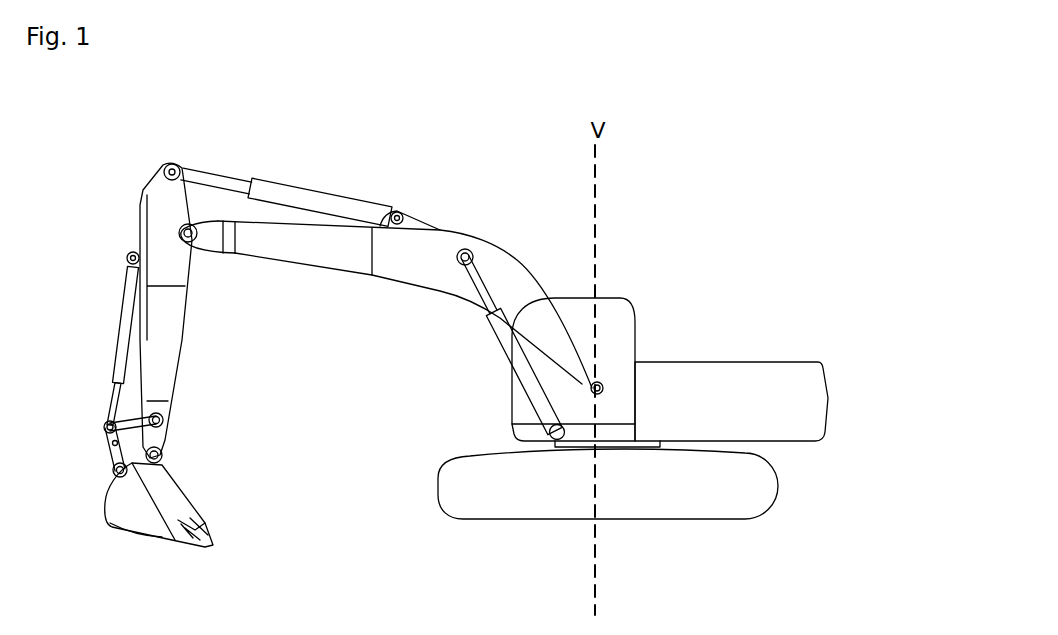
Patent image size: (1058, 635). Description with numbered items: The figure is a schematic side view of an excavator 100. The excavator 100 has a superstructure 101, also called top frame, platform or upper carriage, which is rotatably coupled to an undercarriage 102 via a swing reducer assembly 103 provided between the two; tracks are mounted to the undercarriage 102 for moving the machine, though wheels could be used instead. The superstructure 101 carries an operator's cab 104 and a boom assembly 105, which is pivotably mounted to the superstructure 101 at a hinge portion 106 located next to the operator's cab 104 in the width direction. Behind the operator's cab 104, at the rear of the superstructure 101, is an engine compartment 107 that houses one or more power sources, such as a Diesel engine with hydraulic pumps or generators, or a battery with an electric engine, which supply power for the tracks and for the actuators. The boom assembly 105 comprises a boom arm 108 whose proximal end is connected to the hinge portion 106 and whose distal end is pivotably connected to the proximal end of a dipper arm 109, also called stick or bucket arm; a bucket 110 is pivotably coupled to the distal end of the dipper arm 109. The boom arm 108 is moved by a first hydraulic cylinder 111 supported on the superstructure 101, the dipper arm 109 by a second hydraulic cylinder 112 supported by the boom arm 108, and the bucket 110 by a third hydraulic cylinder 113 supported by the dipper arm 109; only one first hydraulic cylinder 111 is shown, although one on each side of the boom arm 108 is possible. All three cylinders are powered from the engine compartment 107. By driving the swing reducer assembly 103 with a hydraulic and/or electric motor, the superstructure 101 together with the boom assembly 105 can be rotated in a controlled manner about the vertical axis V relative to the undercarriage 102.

The excavator 100 is at (817, 288).
The superstructure 101 is at (828, 395).
The undercarriage 102 is at (781, 488).
The swing reducer assembly 103 is at (629, 449).
The operator's cab 104 is at (573, 317).
The boom assembly 105 is at (473, 216).
The hinge portion 106 is at (598, 384).
The engine compartment 107 is at (658, 382).
The boom arm 108 is at (394, 265).
The dipper arm 109 is at (173, 321).
The bucket 110 is at (168, 487).
The first hydraulic cylinder 111 is at (505, 338).
The second hydraulic cylinder 112 is at (317, 195).
The third hydraulic cylinder 113 is at (115, 336).